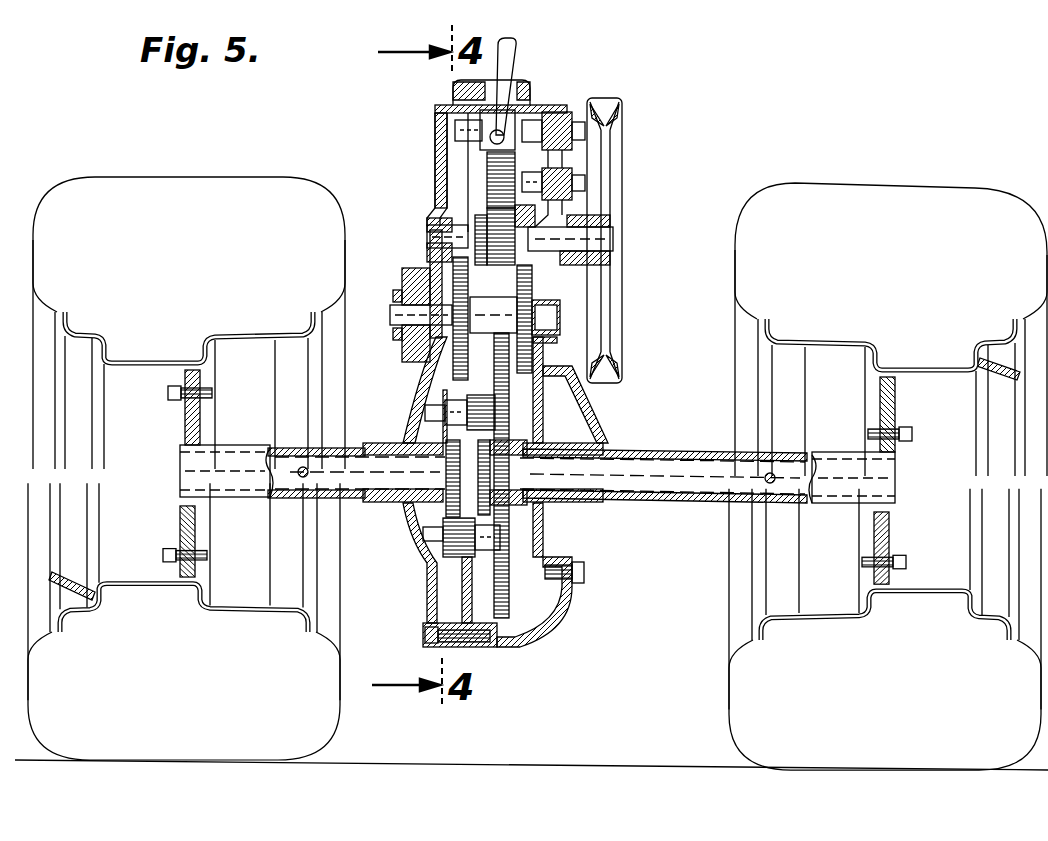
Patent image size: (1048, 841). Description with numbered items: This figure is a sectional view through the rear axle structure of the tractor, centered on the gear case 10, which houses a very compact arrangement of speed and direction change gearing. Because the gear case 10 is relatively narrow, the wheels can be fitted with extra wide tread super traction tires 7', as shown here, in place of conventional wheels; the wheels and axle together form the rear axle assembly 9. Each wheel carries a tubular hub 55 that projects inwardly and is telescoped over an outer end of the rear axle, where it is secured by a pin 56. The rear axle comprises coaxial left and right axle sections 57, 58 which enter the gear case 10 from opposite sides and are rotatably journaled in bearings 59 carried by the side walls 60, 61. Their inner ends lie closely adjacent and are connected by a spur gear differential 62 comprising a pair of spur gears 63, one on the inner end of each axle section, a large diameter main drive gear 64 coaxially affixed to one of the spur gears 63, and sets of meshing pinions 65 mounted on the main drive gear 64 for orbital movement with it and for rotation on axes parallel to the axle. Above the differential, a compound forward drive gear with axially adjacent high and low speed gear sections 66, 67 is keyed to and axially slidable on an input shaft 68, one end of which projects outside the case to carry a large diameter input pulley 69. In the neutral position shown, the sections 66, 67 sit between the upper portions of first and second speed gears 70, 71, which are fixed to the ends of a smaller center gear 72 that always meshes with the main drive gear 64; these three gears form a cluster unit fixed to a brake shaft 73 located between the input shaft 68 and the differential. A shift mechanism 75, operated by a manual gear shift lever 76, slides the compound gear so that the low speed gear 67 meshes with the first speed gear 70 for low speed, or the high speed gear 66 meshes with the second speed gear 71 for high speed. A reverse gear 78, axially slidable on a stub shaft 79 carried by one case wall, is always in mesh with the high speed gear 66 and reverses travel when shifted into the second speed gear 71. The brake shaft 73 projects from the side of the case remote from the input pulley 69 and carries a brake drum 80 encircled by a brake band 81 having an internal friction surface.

The super traction tires 7' is at (537, 456).
The axle and wheel assembly 9 is at (737, 185).
The gear case 10 is at (380, 181).
The tubular hubs 55 is at (243, 450).
The pins 56 is at (303, 466).
The left axle section 57 is at (402, 484).
The right axle section 58 is at (655, 452).
The bearings 59 is at (393, 440).
The side wall 60 is at (432, 574).
The side wall 61 is at (585, 510).
The spur gear differential 62 is at (448, 578).
The spur gears 63 is at (432, 512).
The main drive gear 64 is at (507, 590).
The pinions 65 is at (483, 394).
The high speed gear section 66 is at (522, 216).
The low speed gear section 67 is at (476, 214).
The input shaft 68 is at (606, 236).
The input pulley 69 is at (620, 116).
The first speed gear 70 is at (442, 256).
The second speed gear 71 is at (542, 305).
The center gear 72 is at (495, 304).
The brake shaft 73 is at (392, 313).
The shift mechanism 75 is at (462, 152).
The gear shift lever 76 is at (514, 52).
The reverse gear 78 is at (485, 182).
The stub shaft 79 is at (532, 182).
The brake drum 80 is at (406, 342).
The brake band 81 is at (406, 272).